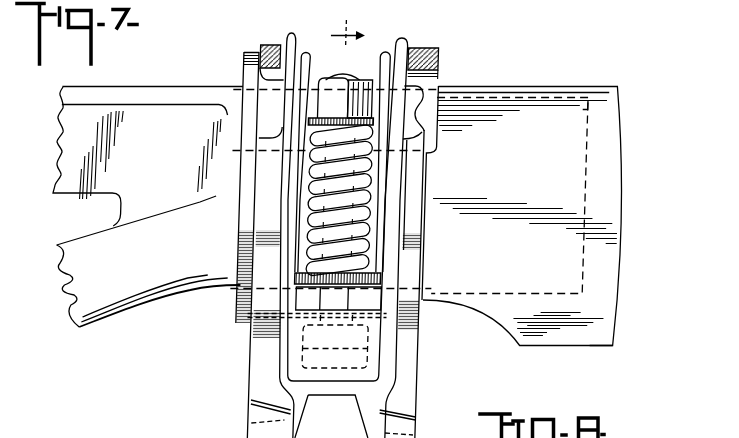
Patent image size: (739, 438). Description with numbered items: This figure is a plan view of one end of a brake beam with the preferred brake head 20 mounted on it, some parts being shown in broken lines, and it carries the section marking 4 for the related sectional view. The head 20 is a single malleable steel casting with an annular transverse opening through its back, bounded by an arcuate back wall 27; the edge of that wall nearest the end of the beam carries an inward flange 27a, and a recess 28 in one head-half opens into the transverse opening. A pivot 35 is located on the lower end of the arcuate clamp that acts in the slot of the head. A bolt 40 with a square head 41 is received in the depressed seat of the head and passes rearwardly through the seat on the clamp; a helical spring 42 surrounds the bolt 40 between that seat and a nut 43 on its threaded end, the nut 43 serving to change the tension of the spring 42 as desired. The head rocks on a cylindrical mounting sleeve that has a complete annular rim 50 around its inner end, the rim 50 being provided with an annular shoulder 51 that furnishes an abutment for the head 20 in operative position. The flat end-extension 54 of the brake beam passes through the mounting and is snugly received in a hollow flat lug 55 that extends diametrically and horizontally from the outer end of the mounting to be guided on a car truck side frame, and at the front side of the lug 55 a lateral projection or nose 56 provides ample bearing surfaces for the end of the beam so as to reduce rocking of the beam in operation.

The section line 4- 4 is at (360, 32).
The brake head 20 is at (244, 379).
The arcuate back wall 27 is at (416, 50).
The inward flange 27a is at (444, 128).
The recess 28 is at (258, 180).
The pivot 35 is at (250, 304).
The bolt 40 is at (351, 77).
The square head 41 is at (315, 347).
The helical spring 42 is at (400, 167).
The nut 43 is at (340, 63).
The annular rim 50 is at (266, 62).
The annular shoulder 51 is at (252, 51).
The end-extension 54 is at (591, 144).
The flat lug 55 is at (606, 202).
The lateral projection or nose 56 is at (604, 337).